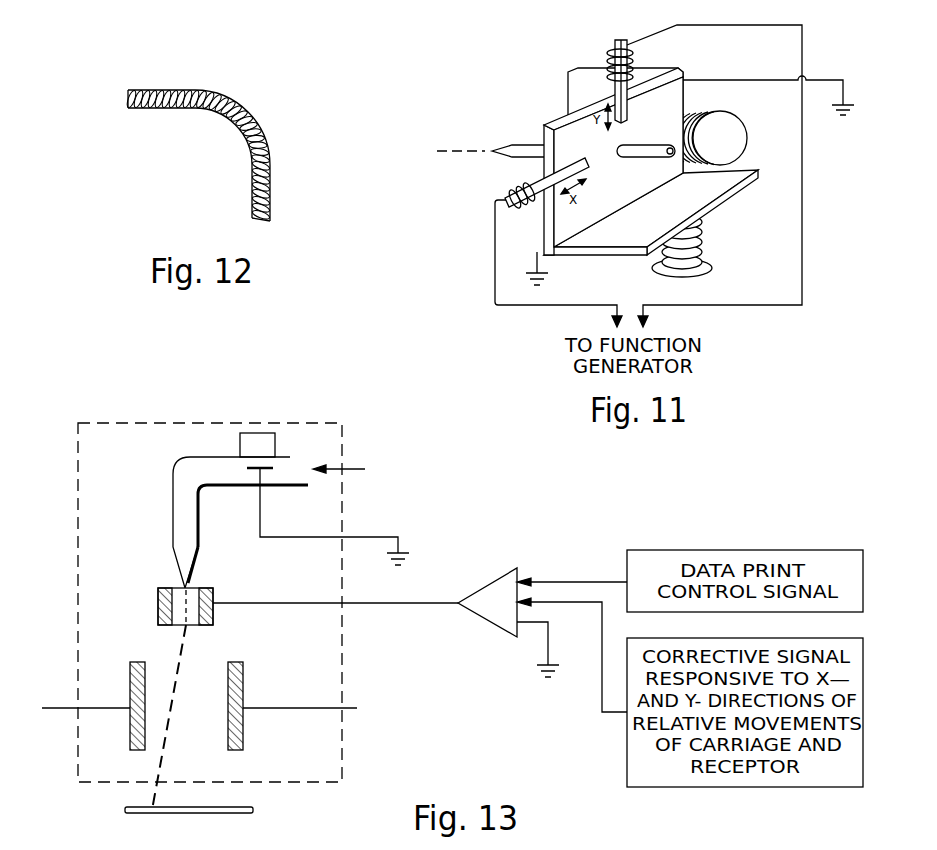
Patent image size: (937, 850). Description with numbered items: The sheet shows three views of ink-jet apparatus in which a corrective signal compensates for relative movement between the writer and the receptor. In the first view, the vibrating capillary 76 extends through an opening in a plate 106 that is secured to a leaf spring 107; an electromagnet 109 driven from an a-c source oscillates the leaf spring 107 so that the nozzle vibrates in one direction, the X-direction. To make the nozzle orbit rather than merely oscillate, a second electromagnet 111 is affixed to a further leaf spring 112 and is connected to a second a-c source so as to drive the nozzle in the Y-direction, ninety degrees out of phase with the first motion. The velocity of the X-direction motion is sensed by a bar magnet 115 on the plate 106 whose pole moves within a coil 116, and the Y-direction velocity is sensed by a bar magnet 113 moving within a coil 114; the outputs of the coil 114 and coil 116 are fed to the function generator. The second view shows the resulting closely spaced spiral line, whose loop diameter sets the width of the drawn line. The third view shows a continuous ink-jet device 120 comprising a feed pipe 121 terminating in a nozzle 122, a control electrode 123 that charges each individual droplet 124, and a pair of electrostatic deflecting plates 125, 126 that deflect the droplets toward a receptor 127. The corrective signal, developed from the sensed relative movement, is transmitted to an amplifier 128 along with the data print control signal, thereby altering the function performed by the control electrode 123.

In FIG. 11, the capillary 76 is at (512, 148).
In FIG. 11, the plate 106 is at (674, 78).
In FIG. 11, the leaf spring 107 is at (577, 87).
In FIG. 11, the electromagnet 109 is at (721, 133).
In FIG. 11, the electromagnet 111 is at (703, 252).
In FIG. 11, the leaf spring 112 is at (708, 193).
In FIG. 11, the bar magnet 113 is at (622, 43).
In FIG. 11, the coil 114 is at (607, 53).
In FIG. 11, the bar magnet 115 is at (542, 183).
In FIG. 11, the coil 116 is at (515, 212).
In FIG. 13, the ink-jet device 120 is at (296, 434).
In FIG. 13, the feed pipe 121 is at (290, 463).
In FIG. 13, the nozzle 122 is at (187, 580).
In FIG. 13, the control electrode 123 is at (158, 603).
In FIG. 13, the droplet 124 is at (180, 653).
In FIG. 13, the electrostatic deflecting plate 125 is at (133, 727).
In FIG. 13, the electrostatic deflecting plate 126 is at (243, 680).
In FIG. 13, the receptor 127 is at (140, 808).
In FIG. 13, the amplifier 128 is at (493, 588).